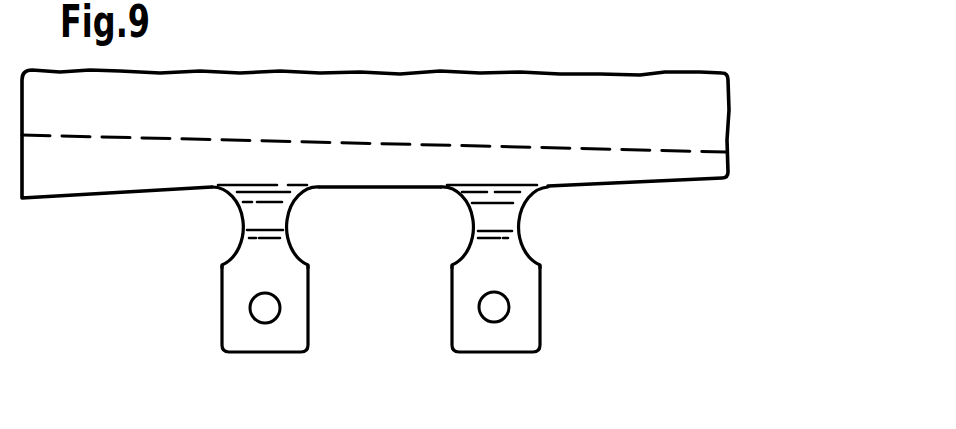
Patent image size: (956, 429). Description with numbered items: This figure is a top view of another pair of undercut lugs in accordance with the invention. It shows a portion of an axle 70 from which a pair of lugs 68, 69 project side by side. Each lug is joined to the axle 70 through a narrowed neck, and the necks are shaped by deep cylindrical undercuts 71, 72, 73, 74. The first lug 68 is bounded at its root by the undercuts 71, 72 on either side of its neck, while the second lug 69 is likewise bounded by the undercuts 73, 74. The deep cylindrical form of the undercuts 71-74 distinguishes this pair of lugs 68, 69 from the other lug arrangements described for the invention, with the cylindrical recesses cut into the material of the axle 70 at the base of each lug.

The axle 70 is at (116, 170).
The deep cylindrical undercut 71 is at (244, 221).
The deep cylindrical undercut 72 is at (292, 248).
The deep cylindrical undercut 73 is at (468, 250).
The deep cylindrical undercut 74 is at (521, 246).
The lug 68 is at (270, 338).
The lug 69 is at (505, 335).